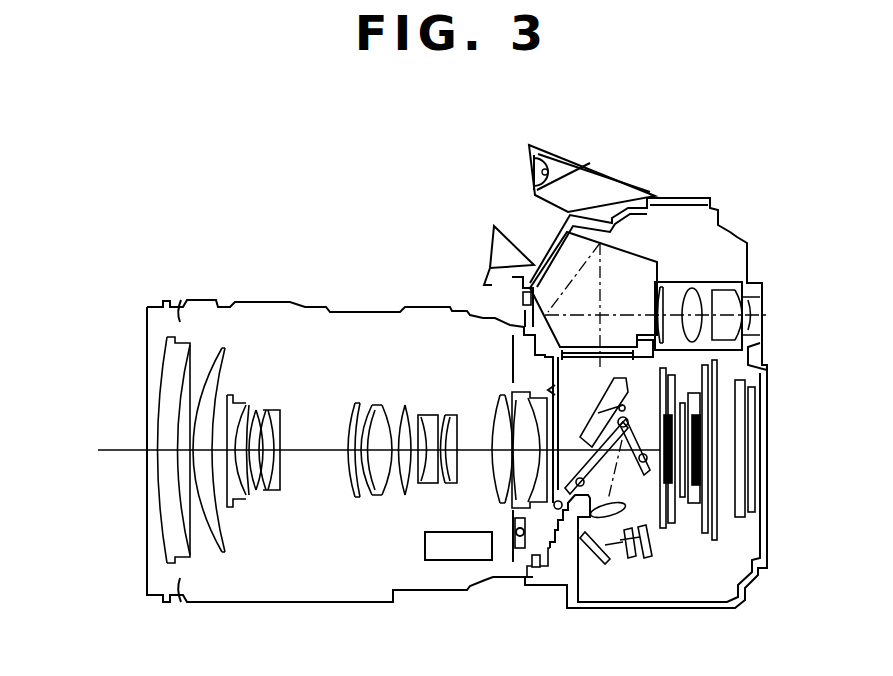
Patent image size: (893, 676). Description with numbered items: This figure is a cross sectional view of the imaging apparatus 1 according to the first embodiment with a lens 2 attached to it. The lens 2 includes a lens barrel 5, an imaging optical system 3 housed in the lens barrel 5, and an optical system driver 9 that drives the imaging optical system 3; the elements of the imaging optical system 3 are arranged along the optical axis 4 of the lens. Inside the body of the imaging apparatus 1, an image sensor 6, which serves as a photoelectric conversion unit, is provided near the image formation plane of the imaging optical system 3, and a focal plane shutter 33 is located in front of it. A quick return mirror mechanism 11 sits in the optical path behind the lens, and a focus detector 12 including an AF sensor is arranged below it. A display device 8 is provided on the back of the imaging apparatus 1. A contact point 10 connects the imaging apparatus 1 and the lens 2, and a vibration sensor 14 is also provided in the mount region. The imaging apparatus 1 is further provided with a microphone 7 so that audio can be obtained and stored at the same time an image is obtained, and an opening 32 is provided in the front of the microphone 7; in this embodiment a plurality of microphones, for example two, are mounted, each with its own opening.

The imaging apparatus 1 is at (611, 379).
The lens 2 is at (347, 426).
The imaging optical system 3 is at (265, 503).
The optical axis 4 is at (105, 448).
The lens barrel 5 is at (212, 300).
The image sensor 6 is at (703, 456).
The microphone 7 is at (523, 277).
The display device 8 is at (755, 396).
The optical system driver 9 is at (434, 562).
The contact point 10 is at (541, 569).
The quick return mirror mechanism 11 is at (602, 476).
The focus detector 12 is at (637, 568).
The vibration sensor 14 is at (520, 550).
The opening 32 is at (509, 299).
The focal plane shutter 33 is at (667, 528).